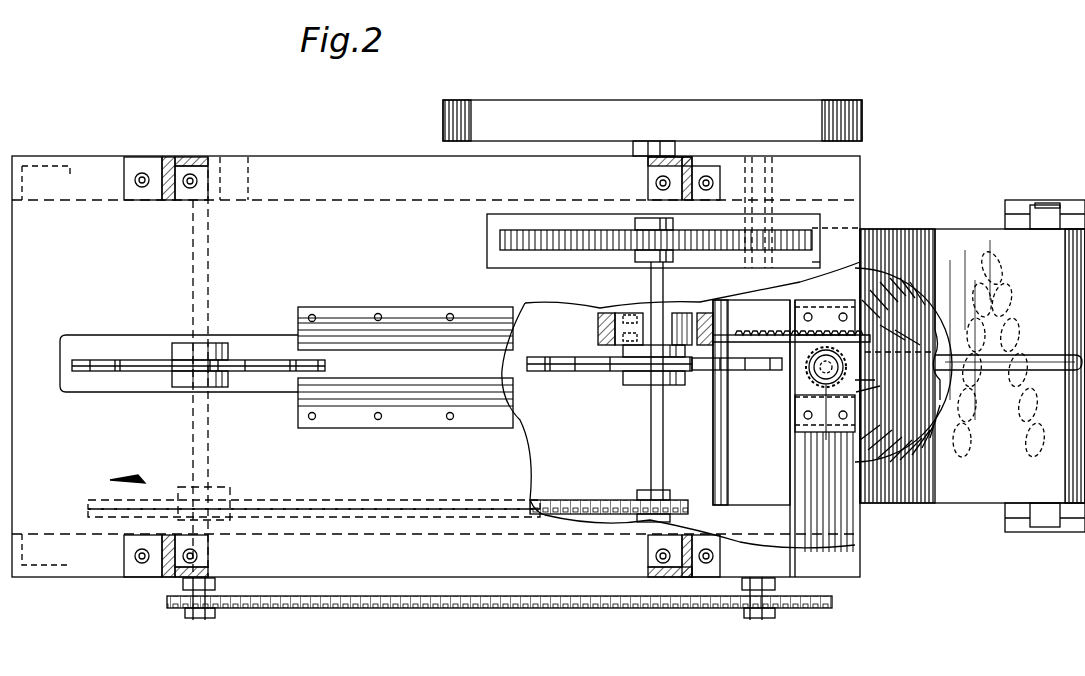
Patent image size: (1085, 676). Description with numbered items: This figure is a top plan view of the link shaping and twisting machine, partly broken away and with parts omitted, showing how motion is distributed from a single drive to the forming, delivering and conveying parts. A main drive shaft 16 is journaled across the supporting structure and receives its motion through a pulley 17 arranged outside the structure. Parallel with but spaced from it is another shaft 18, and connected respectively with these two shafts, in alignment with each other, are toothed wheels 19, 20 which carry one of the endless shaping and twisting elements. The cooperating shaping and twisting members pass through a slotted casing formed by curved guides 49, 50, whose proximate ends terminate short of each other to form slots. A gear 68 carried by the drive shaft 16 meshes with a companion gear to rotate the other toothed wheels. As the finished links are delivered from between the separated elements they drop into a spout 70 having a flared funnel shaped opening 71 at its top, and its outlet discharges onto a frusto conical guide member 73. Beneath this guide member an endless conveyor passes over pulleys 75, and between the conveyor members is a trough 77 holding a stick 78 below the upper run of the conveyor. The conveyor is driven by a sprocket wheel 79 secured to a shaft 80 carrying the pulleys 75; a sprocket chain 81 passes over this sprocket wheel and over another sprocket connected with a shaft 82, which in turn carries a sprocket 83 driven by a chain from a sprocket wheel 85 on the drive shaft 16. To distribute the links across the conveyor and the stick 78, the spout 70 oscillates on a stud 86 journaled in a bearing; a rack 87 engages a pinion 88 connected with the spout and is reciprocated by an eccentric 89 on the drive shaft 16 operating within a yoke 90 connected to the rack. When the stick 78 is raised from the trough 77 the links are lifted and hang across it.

The main drive shaft 16 is at (650, 445).
The pulley 17 is at (626, 105).
The shaft 18 is at (208, 262).
The toothed wheel 19 is at (608, 376).
The toothed wheel 20 is at (153, 373).
The guide 49 is at (300, 400).
The guide 50 is at (299, 330).
The gear 68 is at (503, 243).
The spout 70 is at (866, 382).
The funnel shaped opening 71 is at (821, 423).
The guide member 73 is at (878, 300).
The pulley 75 is at (967, 235).
The trough 77 is at (995, 345).
The stick 78 is at (995, 372).
The sprocket wheel 79 is at (790, 609).
The shaft 80 is at (410, 495).
The sprocket chain 81 is at (442, 609).
The shaft 82 is at (233, 610).
The sprocket 83 is at (130, 470).
The sprocket wheel 85 is at (681, 500).
The stud 86 is at (820, 372).
The rack 87 is at (812, 330).
The pinion 88 is at (850, 346).
The eccentric 89 is at (636, 312).
The yoke 90 is at (598, 322).